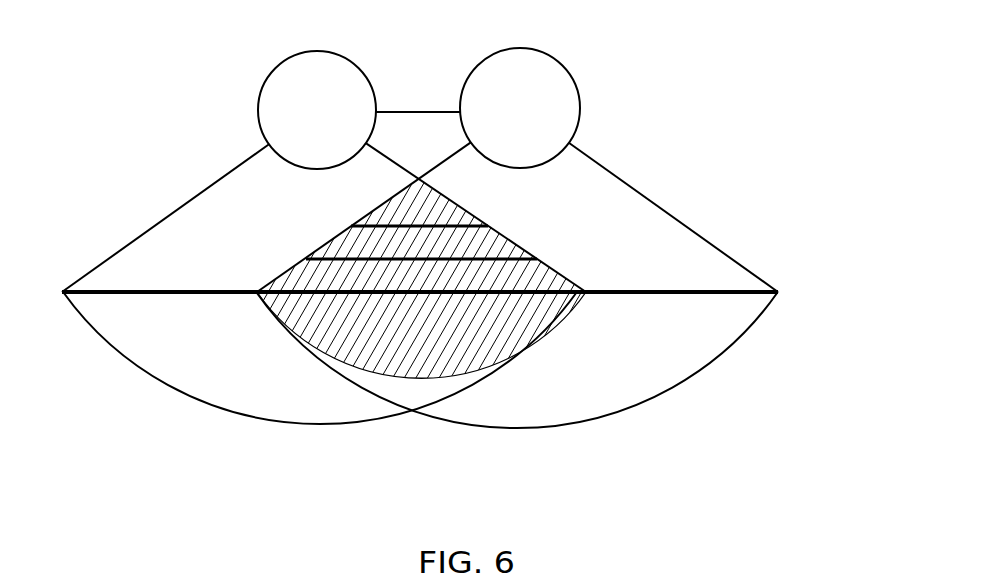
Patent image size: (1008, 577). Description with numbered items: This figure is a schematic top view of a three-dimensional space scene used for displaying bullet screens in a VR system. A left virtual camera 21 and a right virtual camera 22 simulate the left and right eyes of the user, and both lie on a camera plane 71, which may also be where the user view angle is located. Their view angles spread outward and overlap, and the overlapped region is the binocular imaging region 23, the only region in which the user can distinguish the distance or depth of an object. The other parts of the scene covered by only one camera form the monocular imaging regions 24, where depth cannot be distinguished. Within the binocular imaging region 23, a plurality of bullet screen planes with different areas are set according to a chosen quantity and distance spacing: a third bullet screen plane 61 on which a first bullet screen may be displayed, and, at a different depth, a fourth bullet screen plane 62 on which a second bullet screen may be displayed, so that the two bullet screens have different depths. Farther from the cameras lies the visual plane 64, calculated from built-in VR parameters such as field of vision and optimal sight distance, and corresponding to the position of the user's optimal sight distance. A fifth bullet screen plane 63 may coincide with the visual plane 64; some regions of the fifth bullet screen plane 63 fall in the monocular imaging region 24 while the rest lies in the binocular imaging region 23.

The left virtual camera 21 is at (422, 171).
The right virtual camera 22 is at (418, 170).
The binocular imaging region 23 is at (431, 281).
The monocular imaging region 24 is at (285, 375).
The third bullet screen plane 61 is at (407, 223).
The fourth bullet screen plane 62 is at (345, 258).
The fifth bullet screen plane 63 is at (618, 292).
The visual plane 64 is at (495, 472).
The camera plane 71 is at (422, 112).